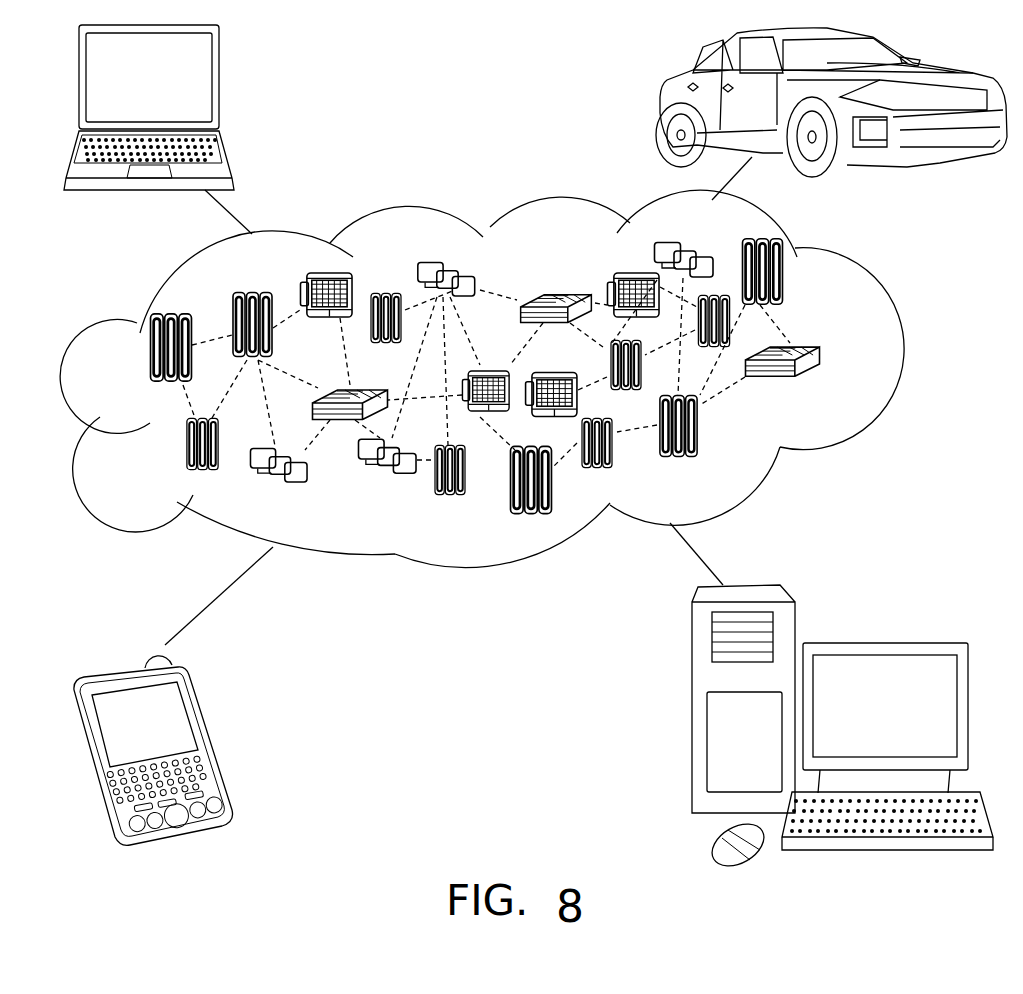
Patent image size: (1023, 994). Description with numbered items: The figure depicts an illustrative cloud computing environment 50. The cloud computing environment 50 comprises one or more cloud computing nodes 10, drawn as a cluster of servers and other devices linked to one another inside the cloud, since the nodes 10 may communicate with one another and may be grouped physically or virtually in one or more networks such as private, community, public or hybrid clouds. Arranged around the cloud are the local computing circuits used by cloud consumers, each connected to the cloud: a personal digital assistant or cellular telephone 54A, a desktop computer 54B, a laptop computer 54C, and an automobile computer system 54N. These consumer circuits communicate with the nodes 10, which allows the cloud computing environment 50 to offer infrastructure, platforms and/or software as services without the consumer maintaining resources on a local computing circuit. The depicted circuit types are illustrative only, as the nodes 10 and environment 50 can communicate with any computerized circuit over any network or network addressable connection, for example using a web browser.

The cloud computing node 10 is at (823, 387).
The cloud computing environment 50 is at (884, 356).
The personal digital assistant or cellular telephone 54A is at (205, 737).
The desktop computer 54B is at (880, 643).
The laptop computer 54C is at (220, 83).
The automobile computer system 54N is at (660, 104).